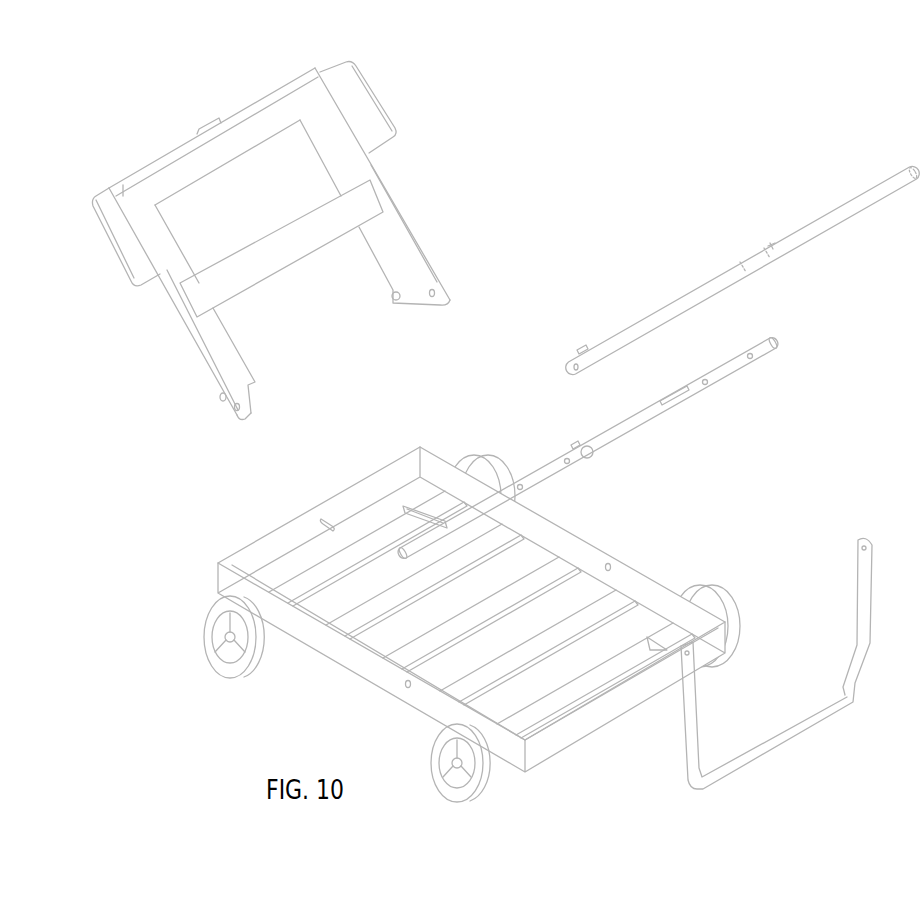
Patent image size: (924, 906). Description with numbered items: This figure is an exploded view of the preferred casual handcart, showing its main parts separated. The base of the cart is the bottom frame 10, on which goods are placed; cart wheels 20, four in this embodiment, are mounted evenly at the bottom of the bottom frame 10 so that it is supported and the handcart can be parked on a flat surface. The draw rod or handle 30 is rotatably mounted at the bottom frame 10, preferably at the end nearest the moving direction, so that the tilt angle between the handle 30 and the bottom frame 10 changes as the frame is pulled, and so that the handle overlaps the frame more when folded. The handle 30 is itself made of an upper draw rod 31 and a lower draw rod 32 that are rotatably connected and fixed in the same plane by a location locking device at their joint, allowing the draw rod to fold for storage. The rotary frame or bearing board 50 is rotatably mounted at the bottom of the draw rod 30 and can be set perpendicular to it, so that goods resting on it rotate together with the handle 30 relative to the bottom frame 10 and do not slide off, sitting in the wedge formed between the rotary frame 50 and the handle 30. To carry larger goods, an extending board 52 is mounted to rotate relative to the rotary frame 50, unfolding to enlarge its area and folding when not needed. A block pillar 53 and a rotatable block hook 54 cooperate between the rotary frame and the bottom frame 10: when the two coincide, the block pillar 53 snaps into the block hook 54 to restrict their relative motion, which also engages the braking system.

The bottom frame 10 is at (279, 572).
The cart wheel 20 is at (222, 648).
The draw rod or handle 30 is at (777, 740).
The upper draw rod 31 is at (814, 229).
The lower draw rod 32 is at (648, 417).
The rotary frame or bearing board 50 is at (192, 163).
The extending board 52 is at (355, 100).
The block pillar 53 is at (326, 522).
The block hook 54 is at (203, 129).